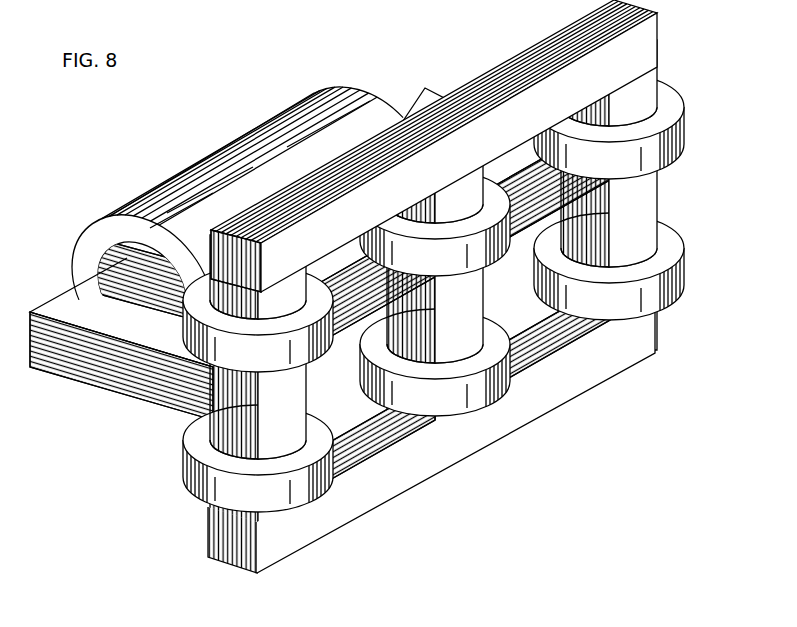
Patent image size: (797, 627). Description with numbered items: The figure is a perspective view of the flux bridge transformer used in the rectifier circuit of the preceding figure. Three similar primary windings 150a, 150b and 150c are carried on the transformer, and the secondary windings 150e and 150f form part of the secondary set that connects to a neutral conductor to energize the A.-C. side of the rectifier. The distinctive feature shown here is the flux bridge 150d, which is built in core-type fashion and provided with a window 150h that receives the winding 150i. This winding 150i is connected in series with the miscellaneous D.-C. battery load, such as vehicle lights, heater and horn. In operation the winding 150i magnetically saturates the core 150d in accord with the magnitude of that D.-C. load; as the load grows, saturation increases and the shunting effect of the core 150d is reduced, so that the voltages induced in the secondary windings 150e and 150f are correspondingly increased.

The primary winding 150a is at (676, 77).
The primary winding 150b is at (509, 266).
The primary winding 150c is at (311, 349).
The flux bridge 150d is at (128, 396).
The secondary winding 150e is at (677, 222).
The secondary winding 150f is at (519, 311).
The window 150h is at (141, 296).
The winding 150i is at (129, 208).